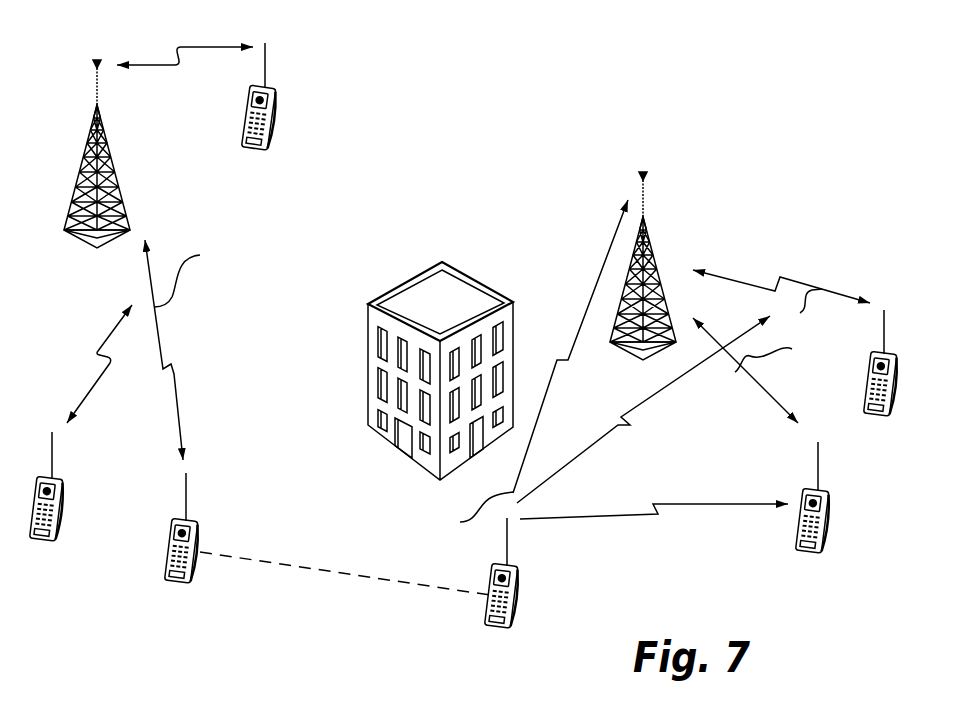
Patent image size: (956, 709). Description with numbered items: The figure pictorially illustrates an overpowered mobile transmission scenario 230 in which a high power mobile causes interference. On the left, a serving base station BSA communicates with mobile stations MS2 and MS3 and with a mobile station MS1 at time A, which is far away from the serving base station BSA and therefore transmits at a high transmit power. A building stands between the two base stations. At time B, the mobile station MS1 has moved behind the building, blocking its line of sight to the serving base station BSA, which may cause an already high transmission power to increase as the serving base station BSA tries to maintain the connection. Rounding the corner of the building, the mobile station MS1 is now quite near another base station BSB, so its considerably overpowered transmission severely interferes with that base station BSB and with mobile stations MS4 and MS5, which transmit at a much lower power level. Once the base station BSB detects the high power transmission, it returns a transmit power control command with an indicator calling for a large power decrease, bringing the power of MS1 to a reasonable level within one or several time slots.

The overpowered mobile transmission scenario 230 is at (556, 131).
The serving base station BSA is at (97, 172).
The base station BSB is at (643, 282).
The mobile station MS1 is at (342, 585).
The mobile station MS2 is at (51, 507).
The mobile station MS3 is at (261, 117).
The mobile station MS4 is at (816, 517).
The mobile station MS5 is at (883, 384).